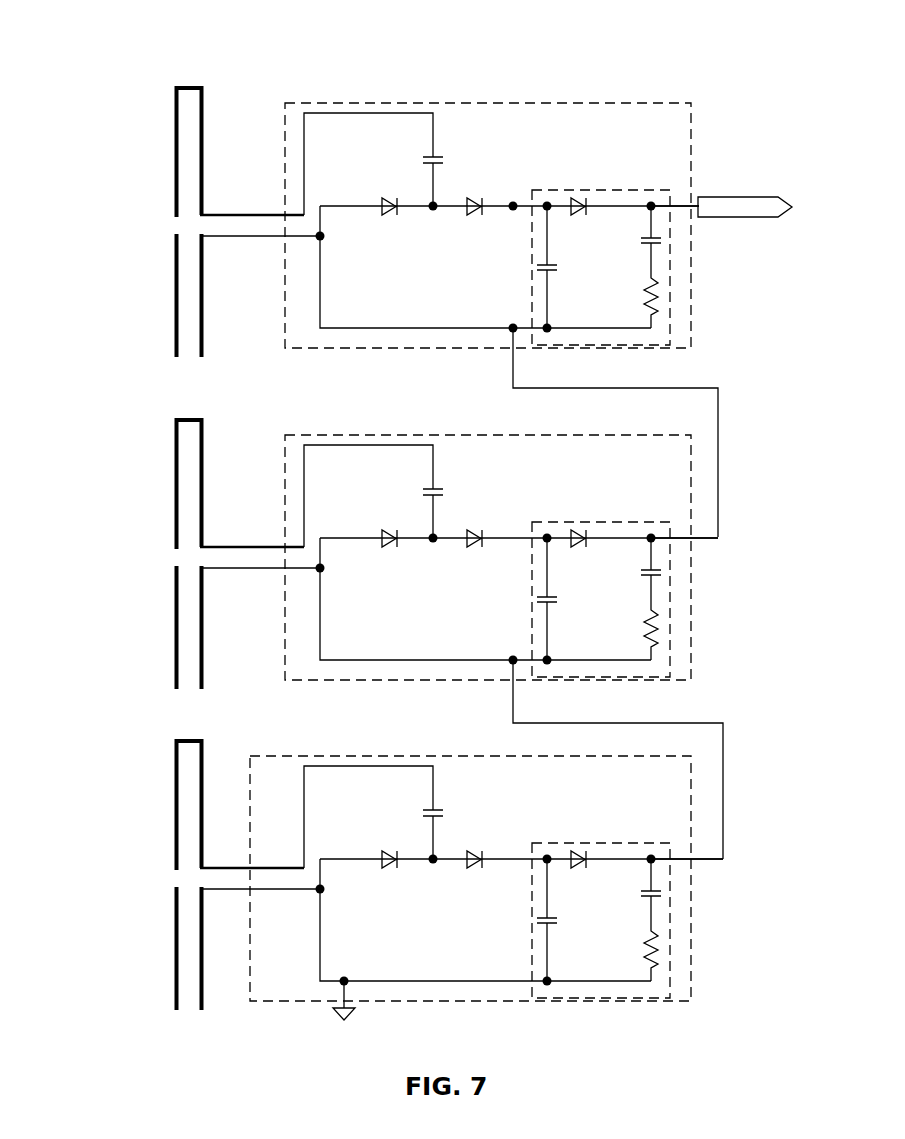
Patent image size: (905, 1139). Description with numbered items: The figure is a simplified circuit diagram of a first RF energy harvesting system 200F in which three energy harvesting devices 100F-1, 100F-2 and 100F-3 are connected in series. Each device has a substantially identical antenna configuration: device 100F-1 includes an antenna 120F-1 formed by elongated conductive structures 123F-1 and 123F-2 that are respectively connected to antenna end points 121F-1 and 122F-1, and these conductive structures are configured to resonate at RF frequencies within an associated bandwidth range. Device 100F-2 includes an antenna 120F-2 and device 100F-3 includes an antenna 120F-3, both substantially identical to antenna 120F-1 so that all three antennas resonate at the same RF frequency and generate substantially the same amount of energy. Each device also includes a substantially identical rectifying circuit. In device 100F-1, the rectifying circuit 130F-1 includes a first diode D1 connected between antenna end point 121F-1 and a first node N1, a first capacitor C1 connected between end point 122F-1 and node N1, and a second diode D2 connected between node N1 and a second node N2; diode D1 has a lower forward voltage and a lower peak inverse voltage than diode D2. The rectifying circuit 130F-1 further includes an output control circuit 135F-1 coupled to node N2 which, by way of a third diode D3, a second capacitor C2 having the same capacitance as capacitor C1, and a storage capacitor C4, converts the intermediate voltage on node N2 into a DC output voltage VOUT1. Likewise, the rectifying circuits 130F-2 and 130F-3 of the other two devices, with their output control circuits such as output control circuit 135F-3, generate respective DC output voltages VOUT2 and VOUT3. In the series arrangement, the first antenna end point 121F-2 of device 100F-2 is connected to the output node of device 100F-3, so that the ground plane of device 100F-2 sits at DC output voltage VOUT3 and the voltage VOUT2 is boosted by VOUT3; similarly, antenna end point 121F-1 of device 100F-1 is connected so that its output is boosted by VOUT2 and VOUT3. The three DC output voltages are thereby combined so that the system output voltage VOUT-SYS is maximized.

The RF energy harvesting system 200F is at (147, 48).
The energy harvesting device 100F-1 is at (385, 92).
The energy harvesting device 100F-2 is at (405, 425).
The energy harvesting device 100F-3 is at (393, 752).
The antenna 120F-1 is at (212, 96).
The antenna 120F-2 is at (305, 552).
The antenna 120F-3 is at (305, 873).
The antenna end point 121F-1 is at (203, 237).
The antenna end point 121F-2 is at (264, 583).
The antenna end point 122F-1 is at (203, 217).
The elongated conductive structure 123F-1 is at (203, 328).
The elongated conductive structure 123F-2 is at (203, 157).
The rectifying circuit 130F-1 is at (613, 136).
The rectifying circuit 130F-2 is at (519, 550).
The rectifying circuit 130F-3 is at (521, 874).
The output control circuit 135F-1 is at (596, 190).
The output control circuit 135F-3 is at (601, 899).
The first capacitor C1 is at (428, 158).
The second capacitor C2 is at (555, 268).
The storage capacitor C4 is at (648, 250).
The first diode D1 is at (386, 204).
The second diode D2 is at (472, 213).
The third diode D3 is at (578, 213).
The first node N1 is at (433, 211).
The second node N2 is at (516, 200).
The DC output voltage VOUT1 is at (680, 203).
The DC output voltage VOUT2 is at (695, 559).
The DC output voltage VOUT3 is at (700, 881).
The system output voltage VOUT-SYS is at (745, 208).